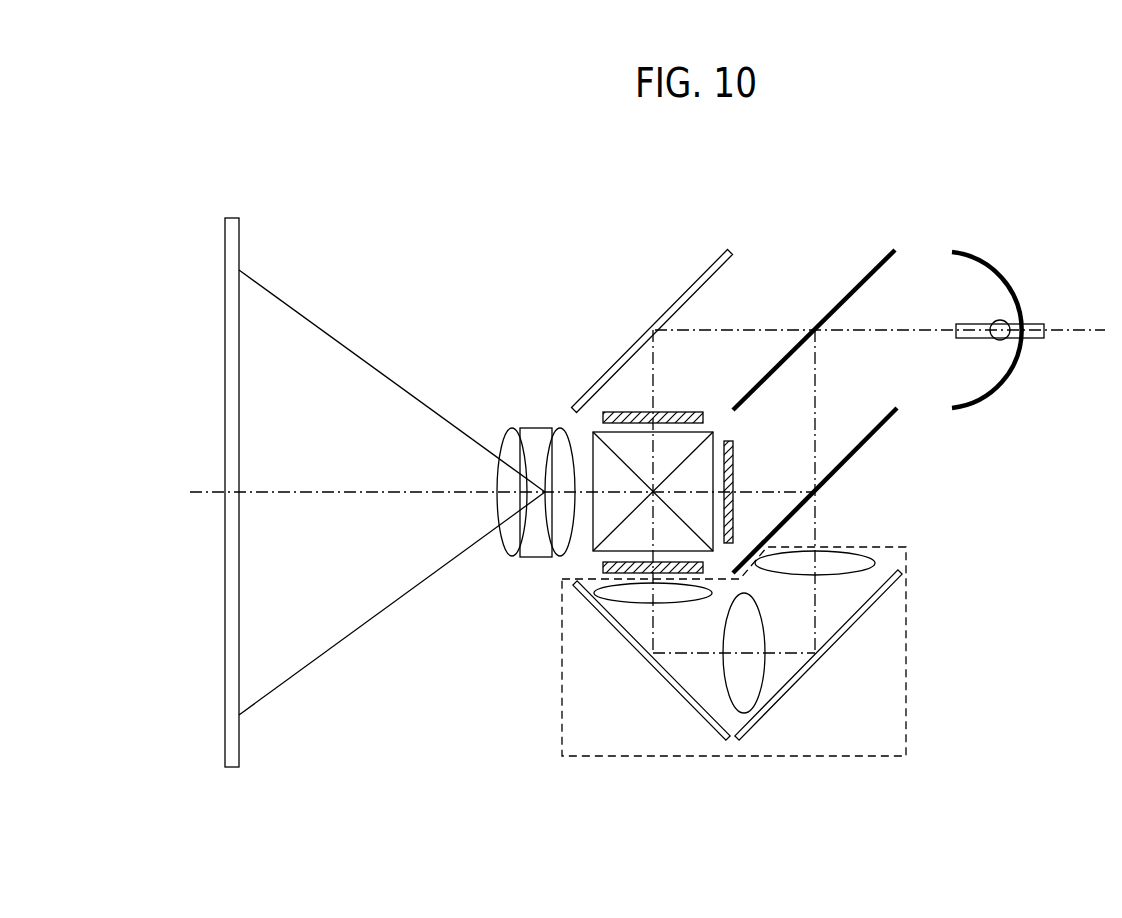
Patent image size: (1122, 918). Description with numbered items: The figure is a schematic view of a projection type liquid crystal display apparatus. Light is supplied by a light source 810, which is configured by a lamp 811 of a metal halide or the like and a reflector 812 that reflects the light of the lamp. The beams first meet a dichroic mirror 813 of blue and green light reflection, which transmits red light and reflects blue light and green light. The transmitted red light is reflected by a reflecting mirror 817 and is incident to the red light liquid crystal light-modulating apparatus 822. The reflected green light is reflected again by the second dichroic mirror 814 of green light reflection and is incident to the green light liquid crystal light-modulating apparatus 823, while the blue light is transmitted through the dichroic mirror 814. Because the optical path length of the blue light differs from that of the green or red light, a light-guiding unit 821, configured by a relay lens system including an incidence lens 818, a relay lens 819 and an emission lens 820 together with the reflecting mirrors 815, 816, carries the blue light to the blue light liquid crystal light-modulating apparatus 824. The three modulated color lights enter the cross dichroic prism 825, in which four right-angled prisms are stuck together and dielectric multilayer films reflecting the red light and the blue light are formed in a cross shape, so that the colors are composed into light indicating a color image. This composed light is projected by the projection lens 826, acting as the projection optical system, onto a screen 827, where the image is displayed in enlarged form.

The light source 810 is at (1005, 320).
The lamp 811 is at (998, 322).
The reflector 812 is at (998, 388).
The dichroic mirror 813 is at (852, 293).
The dichroic mirror 814 is at (867, 438).
The reflecting mirror 815 is at (866, 613).
The reflecting mirror 816 is at (687, 698).
The reflecting mirror 817 is at (683, 289).
The incidence lens 818 is at (874, 561).
The relay lens 819 is at (753, 668).
The emission lens 820 is at (608, 600).
The light-guiding unit 821 is at (906, 706).
The red light liquid crystal light-modulating apparatus 822 is at (688, 410).
The green light liquid crystal light-modulating apparatus 823 is at (734, 481).
The blue light liquid crystal light-modulating apparatus 824 is at (603, 568).
The cross dichroic prism 825 is at (608, 521).
The projection lens 826 is at (577, 426).
The screen 827 is at (240, 672).